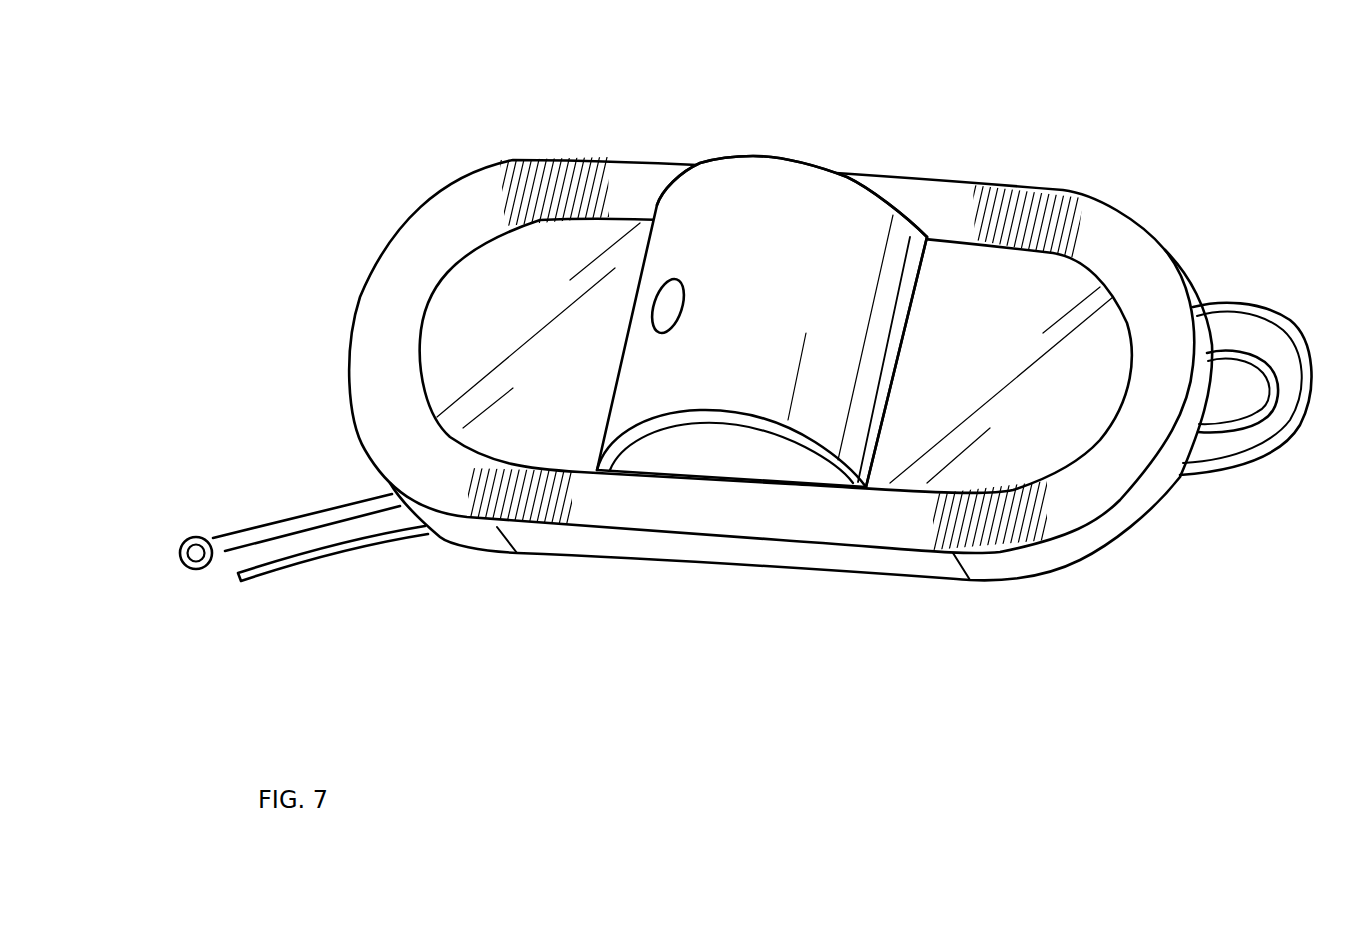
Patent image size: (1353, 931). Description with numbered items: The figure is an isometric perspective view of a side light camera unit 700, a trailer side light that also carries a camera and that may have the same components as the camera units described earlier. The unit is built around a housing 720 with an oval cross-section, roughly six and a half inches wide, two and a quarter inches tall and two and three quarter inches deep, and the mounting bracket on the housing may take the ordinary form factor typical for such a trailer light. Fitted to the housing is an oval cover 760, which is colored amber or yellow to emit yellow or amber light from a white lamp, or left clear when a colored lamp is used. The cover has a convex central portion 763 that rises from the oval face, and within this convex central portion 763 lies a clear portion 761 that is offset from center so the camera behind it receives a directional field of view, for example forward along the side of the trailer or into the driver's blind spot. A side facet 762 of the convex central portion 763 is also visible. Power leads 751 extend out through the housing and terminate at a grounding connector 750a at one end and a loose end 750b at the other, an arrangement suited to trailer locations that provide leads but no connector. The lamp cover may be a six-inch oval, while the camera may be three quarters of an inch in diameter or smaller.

The side light camera unit 700 is at (696, 387).
The housing 720 is at (1057, 552).
The grounding connector 750a is at (192, 537).
The loose end 750b is at (263, 576).
The power leads 751 is at (255, 542).
The cover 760 is at (1043, 283).
The clear portion 761 is at (662, 277).
The side facet 762 is at (847, 210).
The convex central portion 763 is at (757, 207).